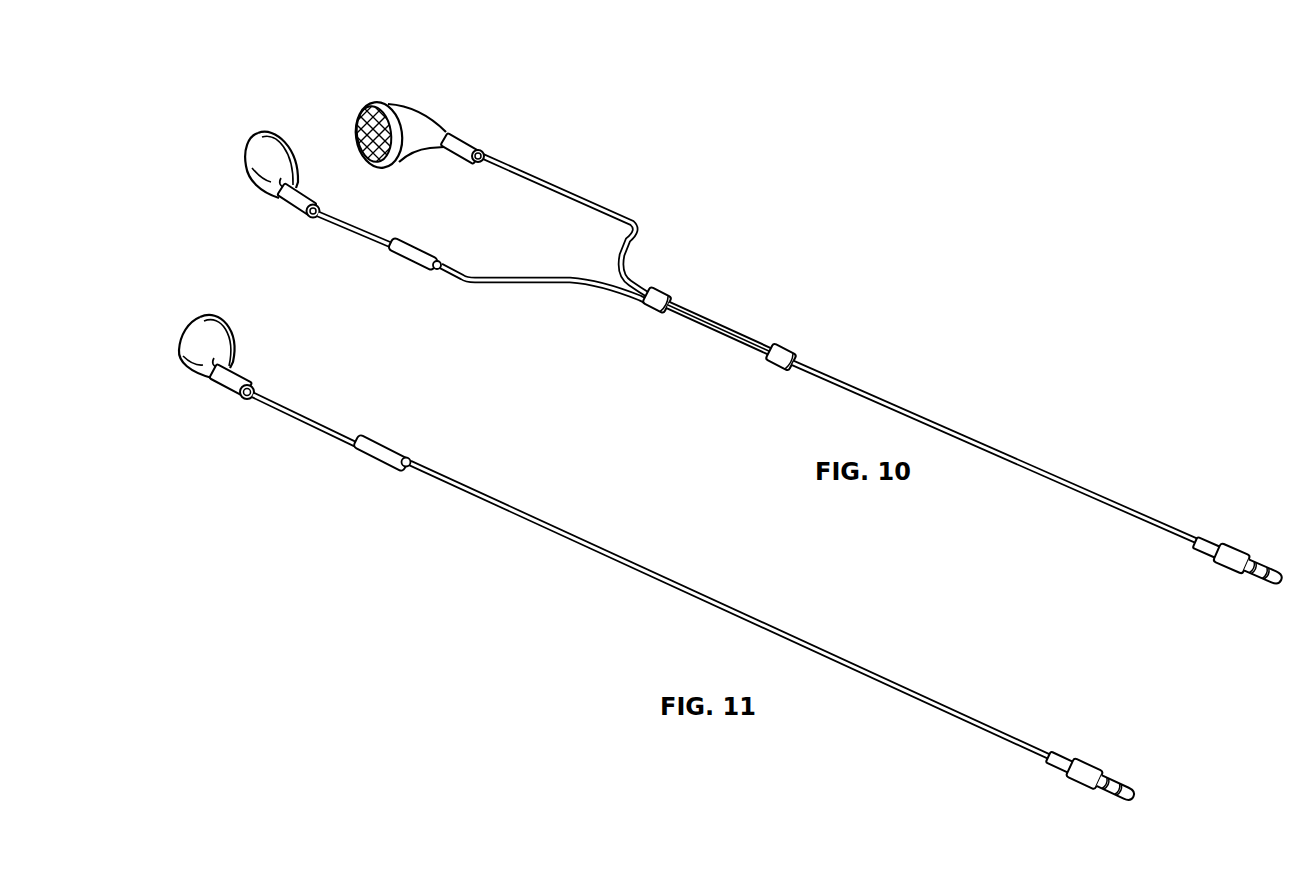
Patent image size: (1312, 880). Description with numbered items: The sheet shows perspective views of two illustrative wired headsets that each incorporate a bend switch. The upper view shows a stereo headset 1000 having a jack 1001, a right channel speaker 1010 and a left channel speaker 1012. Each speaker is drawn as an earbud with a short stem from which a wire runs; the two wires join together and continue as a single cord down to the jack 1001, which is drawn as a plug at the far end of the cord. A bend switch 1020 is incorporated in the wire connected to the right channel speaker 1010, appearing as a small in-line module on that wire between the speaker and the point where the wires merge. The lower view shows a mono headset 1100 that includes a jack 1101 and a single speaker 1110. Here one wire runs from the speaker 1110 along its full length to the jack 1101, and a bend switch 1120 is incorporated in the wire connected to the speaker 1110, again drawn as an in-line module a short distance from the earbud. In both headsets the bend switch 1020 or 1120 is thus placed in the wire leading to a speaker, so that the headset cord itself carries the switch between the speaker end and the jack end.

In FIG. 10, the stereo headset 1000 is at (286, 60).
In FIG. 10, the right channel speaker 1010 is at (248, 146).
In FIG. 10, the left channel speaker 1012 is at (371, 104).
In FIG. 10, the bend switch 1020 is at (404, 258).
In FIG. 10, the jack 1001 is at (1224, 568).
In FIG. 11, the mono headset 1100 is at (183, 303).
In FIG. 11, the speaker 1110 is at (226, 332).
In FIG. 11, the bend switch 1120 is at (393, 449).
In FIG. 11, the jack 1101 is at (1096, 765).